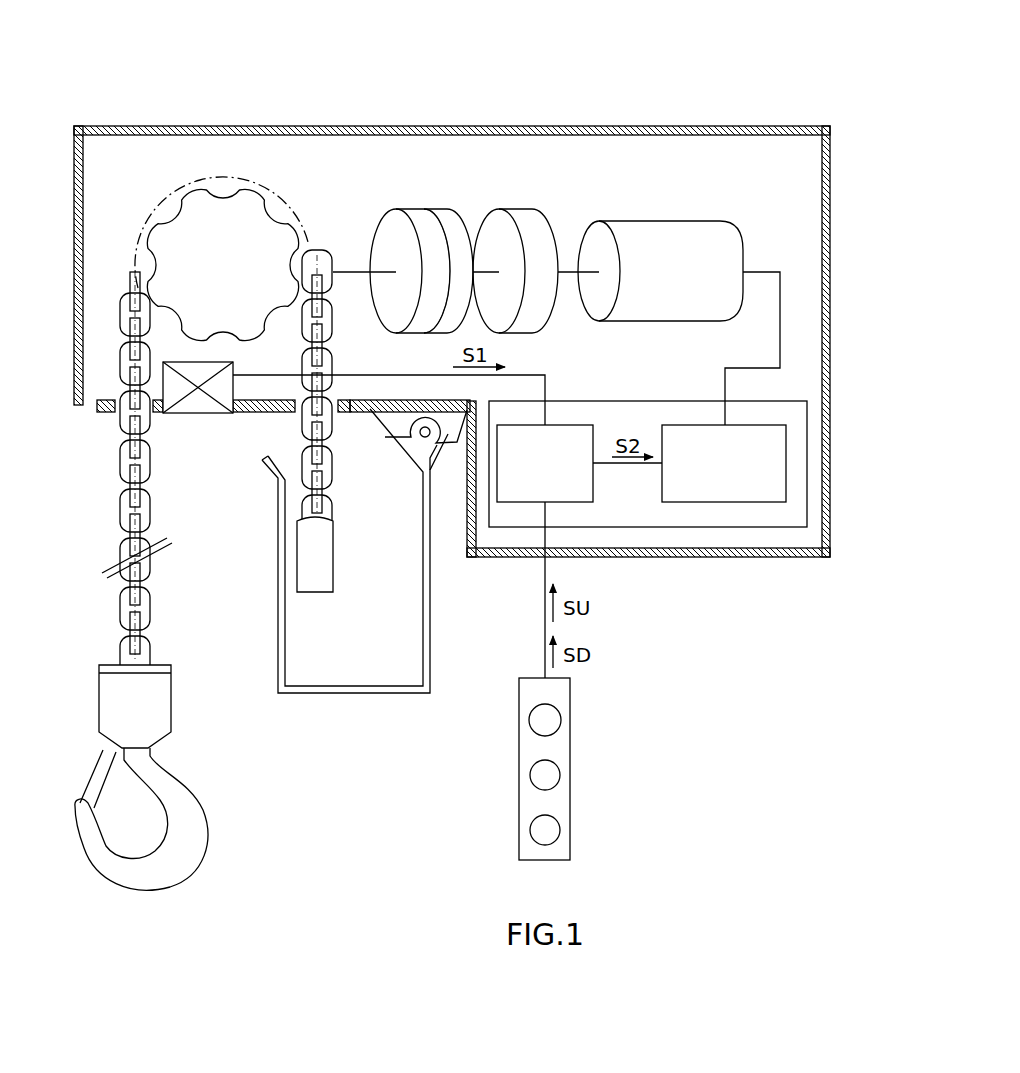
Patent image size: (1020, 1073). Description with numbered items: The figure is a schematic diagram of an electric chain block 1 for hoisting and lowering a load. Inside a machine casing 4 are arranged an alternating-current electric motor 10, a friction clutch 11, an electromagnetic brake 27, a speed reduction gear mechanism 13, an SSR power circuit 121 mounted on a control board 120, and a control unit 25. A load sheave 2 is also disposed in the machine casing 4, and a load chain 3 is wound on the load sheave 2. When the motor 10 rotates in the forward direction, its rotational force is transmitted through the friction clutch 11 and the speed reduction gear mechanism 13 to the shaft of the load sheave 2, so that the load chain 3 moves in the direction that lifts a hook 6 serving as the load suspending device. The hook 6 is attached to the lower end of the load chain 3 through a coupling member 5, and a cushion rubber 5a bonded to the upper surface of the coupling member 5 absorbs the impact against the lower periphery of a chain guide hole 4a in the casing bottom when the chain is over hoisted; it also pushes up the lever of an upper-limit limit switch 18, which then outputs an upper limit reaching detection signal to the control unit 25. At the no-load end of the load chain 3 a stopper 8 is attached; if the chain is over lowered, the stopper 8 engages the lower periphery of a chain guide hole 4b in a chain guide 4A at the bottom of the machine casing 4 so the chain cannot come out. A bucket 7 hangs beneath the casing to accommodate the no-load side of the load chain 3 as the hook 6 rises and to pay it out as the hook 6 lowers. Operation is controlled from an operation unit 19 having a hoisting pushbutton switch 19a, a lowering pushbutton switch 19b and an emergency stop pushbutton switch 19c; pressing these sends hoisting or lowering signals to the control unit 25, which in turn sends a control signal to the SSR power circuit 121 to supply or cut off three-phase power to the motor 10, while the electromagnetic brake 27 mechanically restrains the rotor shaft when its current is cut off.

The electric chain block 1 is at (405, 84).
The load sheave 2 is at (228, 205).
The load chain 3 is at (122, 508).
The machine casing 4 is at (443, 301).
The chain guide hole 4a is at (115, 415).
The chain guide hole 4b is at (338, 412).
The chain guide 4A is at (258, 413).
The coupling member 5 is at (156, 682).
The cushion rubber 5a is at (165, 665).
The hook 6 is at (193, 815).
The bucket 7 is at (430, 630).
The stopper 8 is at (323, 566).
The alternating-current electric motor 10 is at (663, 232).
The friction clutch 11 is at (525, 210).
The speed reduction gear mechanism 13 is at (410, 215).
The electromagnetic brake 27 is at (441, 209).
The upper-limit limit switch 18 is at (208, 413).
The operation unit 19 is at (539, 769).
The hoisting pushbutton switch 19a is at (562, 775).
The lowering pushbutton switch 19b is at (562, 830).
The emergency stop pushbutton switch 19c is at (562, 720).
The control unit 25 is at (575, 502).
The control board 120 is at (678, 527).
The SSR power circuit 121 is at (786, 477).